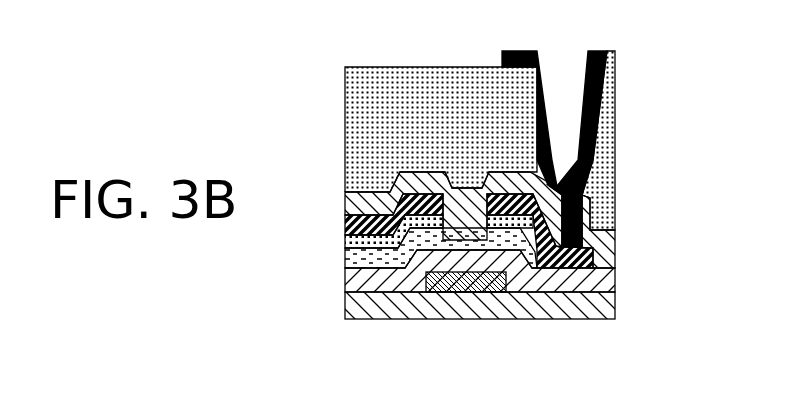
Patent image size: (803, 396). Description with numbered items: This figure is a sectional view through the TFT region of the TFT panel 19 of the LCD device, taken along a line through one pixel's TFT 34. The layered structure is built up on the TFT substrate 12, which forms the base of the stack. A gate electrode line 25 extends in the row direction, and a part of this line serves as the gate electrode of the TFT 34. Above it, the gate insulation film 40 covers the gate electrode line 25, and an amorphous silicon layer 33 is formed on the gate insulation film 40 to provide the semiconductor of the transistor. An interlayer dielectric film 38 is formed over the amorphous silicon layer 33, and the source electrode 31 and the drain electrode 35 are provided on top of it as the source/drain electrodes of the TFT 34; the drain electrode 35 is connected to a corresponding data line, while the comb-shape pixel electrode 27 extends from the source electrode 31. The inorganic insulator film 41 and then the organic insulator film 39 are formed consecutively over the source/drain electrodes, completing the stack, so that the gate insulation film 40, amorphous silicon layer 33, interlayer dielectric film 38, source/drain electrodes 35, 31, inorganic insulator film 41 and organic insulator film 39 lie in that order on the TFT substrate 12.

The TFT substrate 12 is at (349, 304).
The TFT panel 19 is at (645, 92).
The gate electrode line 25 is at (472, 293).
The comb-shape pixel electrode 27 is at (520, 52).
The source electrode 31 is at (552, 150).
The amorphous silicon layer 33 is at (347, 258).
The TFT 34 is at (387, 170).
The drain electrode 35 is at (350, 224).
The interlayer dielectric film 38 is at (347, 240).
The organic insulator film 39 is at (367, 110).
The gate insulation film 40 is at (349, 280).
The inorganic insulator film 41 is at (350, 204).